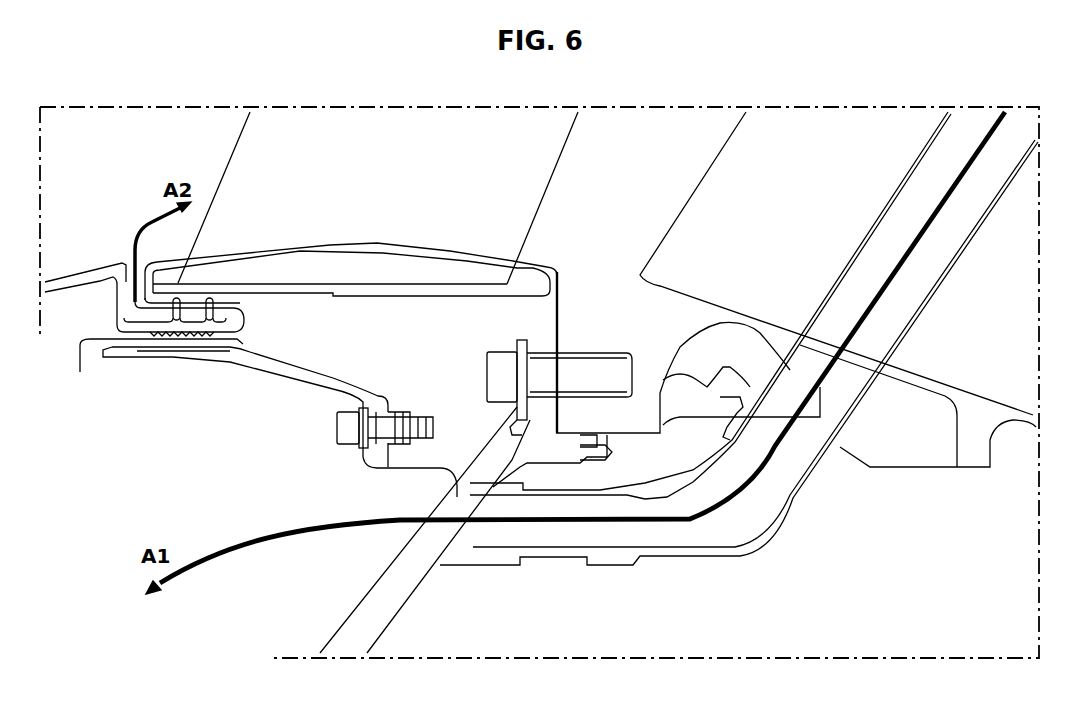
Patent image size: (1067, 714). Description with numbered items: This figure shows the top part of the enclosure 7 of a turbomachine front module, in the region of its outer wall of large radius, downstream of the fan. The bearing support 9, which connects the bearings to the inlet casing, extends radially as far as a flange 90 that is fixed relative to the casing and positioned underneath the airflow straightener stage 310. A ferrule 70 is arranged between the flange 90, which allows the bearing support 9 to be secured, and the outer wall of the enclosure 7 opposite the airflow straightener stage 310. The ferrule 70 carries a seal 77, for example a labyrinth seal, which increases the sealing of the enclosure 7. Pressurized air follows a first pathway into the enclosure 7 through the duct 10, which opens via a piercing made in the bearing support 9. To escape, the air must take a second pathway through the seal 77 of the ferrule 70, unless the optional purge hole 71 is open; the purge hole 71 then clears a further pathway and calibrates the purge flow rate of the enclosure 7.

The airflow straightener stage 310 is at (400, 184).
The enclosure 7 is at (202, 479).
The purge hole 71 is at (100, 300).
The seal 77 is at (108, 347).
The ferrule 70 is at (295, 386).
The flange 90 is at (420, 462).
The bearing support 9 is at (370, 618).
The duct 10 is at (747, 517).